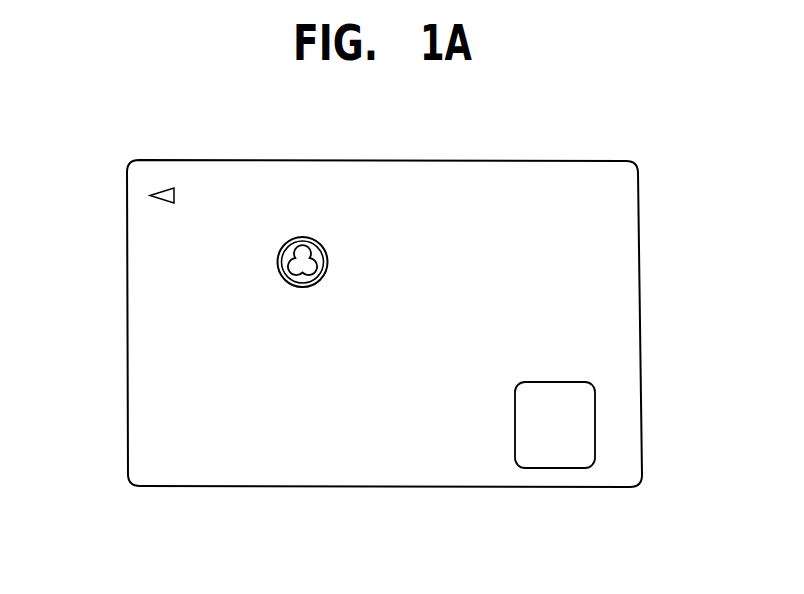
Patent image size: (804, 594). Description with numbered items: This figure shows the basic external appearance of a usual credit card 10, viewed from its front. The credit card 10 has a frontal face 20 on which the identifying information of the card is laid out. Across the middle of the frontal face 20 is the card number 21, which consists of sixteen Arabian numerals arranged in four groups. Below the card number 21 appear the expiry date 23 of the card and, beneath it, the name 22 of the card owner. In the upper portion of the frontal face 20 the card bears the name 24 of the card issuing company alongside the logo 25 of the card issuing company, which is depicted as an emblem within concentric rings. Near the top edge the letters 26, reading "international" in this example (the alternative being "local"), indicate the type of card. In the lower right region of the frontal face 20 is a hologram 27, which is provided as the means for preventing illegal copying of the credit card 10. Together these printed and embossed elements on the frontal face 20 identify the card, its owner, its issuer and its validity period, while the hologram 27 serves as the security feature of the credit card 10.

The credit card 10 is at (400, 497).
The frontal face 20 is at (622, 222).
The card number 21 is at (522, 333).
The name of the card owner 22 is at (180, 446).
The expiry date 23 is at (160, 397).
The name of the card issuing company 24 is at (392, 246).
The logo of the card issuing company 25 is at (278, 262).
The letters "local" / "international" 26 is at (246, 187).
The hologram 27 is at (565, 466).